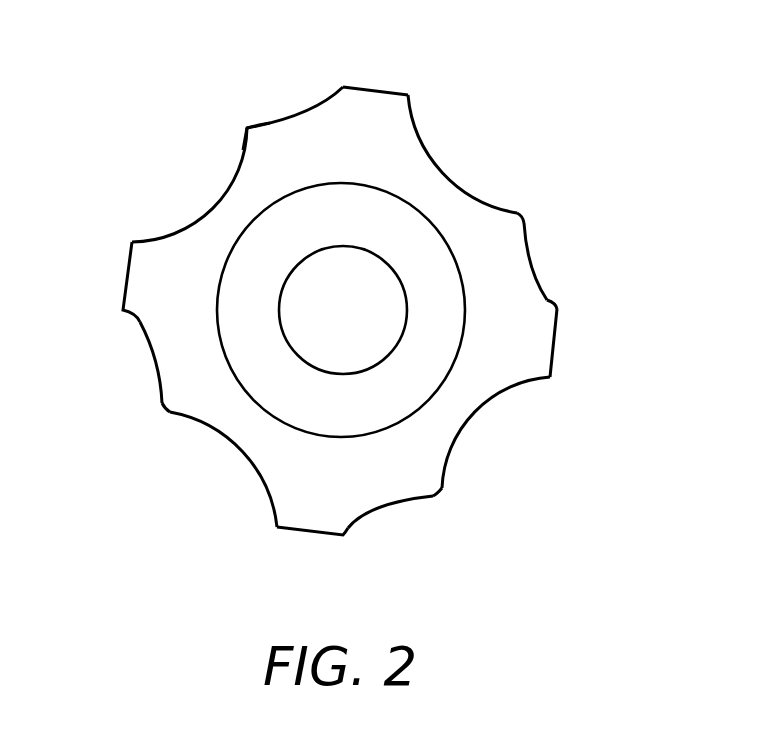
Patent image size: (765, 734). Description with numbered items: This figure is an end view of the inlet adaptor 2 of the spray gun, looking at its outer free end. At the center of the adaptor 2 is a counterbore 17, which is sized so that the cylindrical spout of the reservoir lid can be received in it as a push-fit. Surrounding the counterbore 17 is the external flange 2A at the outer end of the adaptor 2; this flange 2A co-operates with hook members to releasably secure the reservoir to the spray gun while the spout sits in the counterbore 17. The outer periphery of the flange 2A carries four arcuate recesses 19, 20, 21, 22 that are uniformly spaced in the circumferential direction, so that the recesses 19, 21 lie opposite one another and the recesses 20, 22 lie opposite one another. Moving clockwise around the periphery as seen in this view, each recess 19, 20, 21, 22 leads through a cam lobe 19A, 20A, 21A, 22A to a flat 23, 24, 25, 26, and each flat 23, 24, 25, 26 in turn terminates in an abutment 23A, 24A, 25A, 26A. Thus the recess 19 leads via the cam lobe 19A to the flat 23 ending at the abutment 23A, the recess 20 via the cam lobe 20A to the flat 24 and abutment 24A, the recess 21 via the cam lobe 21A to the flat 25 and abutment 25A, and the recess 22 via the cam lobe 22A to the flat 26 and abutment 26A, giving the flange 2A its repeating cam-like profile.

The inlet adaptor 2 is at (375, 313).
The external flange 2A is at (540, 343).
The counterbore 17 is at (325, 293).
The arcuate recess 19 is at (457, 188).
The cam lobe 19A is at (518, 213).
The arcuate recess 20 is at (470, 417).
The cam lobe 20A is at (442, 488).
The arcuate recess 21 is at (237, 437).
The cam lobe 21A is at (163, 412).
The arcuate recess 22 is at (232, 178).
The cam lobe 22A is at (247, 128).
The flat 23 is at (528, 250).
The abutment 23A is at (547, 300).
The flat 24 is at (402, 505).
The abutment 24A is at (358, 522).
The flat 25 is at (158, 370).
The abutment 25A is at (137, 323).
The flat 26 is at (287, 118).
The abutment 26A is at (333, 103).